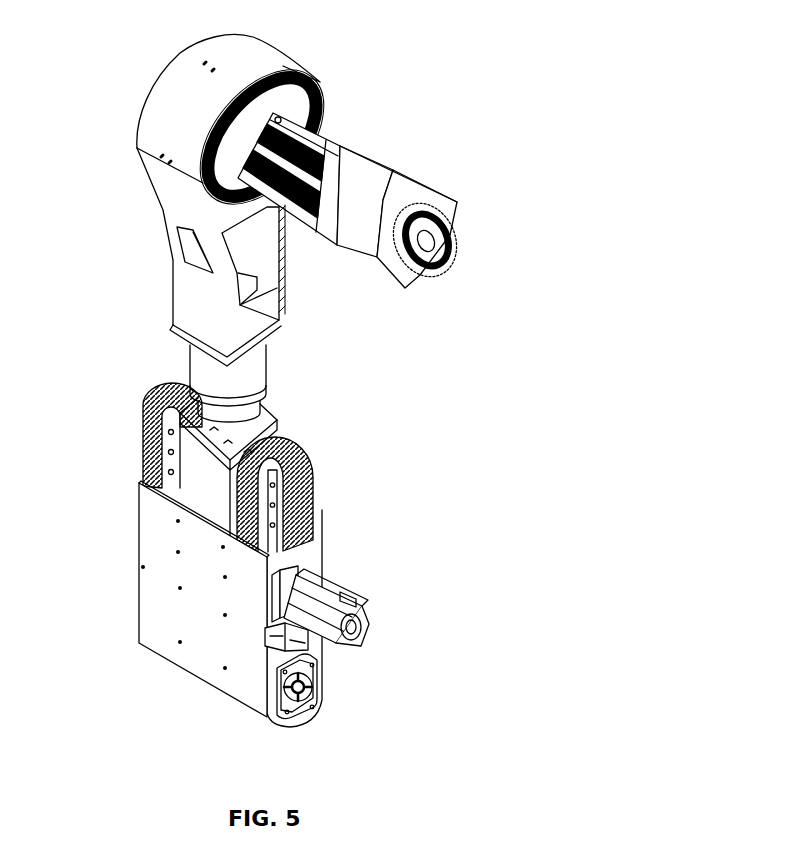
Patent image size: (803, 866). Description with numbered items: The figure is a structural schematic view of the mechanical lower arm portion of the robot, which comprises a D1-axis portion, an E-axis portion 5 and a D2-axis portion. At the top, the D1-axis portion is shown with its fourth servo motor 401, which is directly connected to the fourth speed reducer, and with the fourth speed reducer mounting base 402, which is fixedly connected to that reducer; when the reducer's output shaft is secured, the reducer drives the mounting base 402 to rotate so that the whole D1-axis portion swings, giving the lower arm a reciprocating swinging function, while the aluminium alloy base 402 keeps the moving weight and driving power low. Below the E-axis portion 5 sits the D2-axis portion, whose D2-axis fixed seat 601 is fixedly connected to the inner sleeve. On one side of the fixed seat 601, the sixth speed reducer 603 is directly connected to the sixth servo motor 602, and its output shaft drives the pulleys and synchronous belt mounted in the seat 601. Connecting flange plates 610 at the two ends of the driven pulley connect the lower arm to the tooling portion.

The E-axis portion 5 is at (188, 371).
The fourth servo motor 401 is at (357, 177).
The fourth speed reducer mounting base 402 is at (280, 320).
The D2-axis fixed seat 601 is at (210, 497).
The sixth servo motor 602 is at (327, 585).
The sixth speed reducer 603 is at (330, 650).
The connecting flange plate 610 is at (305, 710).